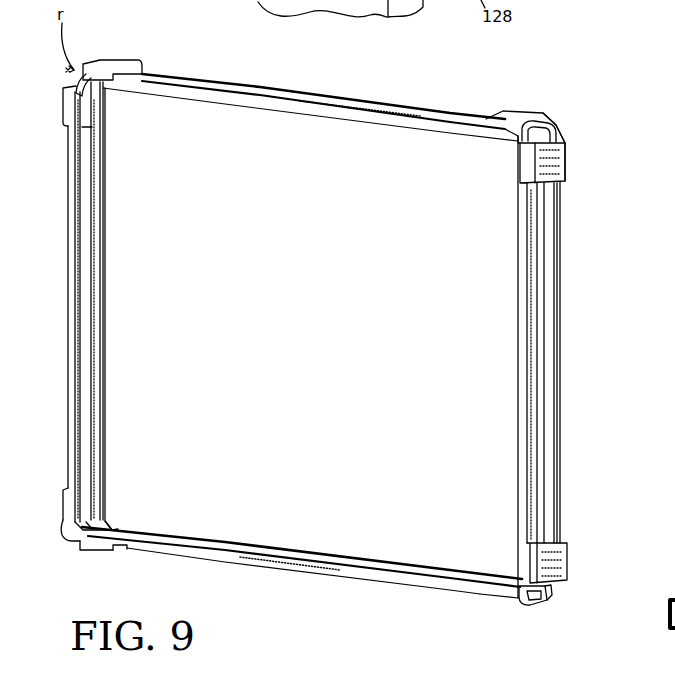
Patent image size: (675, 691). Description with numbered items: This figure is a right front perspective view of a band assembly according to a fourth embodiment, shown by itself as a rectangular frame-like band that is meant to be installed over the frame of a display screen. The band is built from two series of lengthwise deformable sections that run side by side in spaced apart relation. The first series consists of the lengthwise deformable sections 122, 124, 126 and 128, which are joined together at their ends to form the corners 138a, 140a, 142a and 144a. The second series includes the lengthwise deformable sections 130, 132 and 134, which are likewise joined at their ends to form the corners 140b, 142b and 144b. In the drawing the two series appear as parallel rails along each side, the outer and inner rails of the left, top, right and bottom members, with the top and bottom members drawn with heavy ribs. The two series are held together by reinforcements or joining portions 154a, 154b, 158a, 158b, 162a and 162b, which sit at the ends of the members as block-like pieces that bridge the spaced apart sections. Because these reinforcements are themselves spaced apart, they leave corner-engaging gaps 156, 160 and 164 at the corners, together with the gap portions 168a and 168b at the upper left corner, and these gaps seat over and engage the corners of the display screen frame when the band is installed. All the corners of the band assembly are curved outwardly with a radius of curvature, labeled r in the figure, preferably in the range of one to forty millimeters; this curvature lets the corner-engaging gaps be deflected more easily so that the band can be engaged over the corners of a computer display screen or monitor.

The lengthwise deformable section 122 is at (105, 316).
The lengthwise deformable section 124 is at (310, 85).
The lengthwise deformable section 126 is at (583, 367).
The lengthwise deformable section 128 is at (302, 582).
The lengthwise deformable section 130 is at (98, 265).
The lengthwise deformable section 132 is at (255, 86).
The lengthwise deformable section 134 is at (552, 308).
The corner 138a is at (86, 74).
The corner 140a is at (528, 130).
The corner 140b is at (560, 134).
The corner 142a is at (522, 598).
The corner 142b is at (551, 592).
The corner 144a is at (72, 530).
The corner 144b is at (116, 523).
The reinforcement or joining portion 154a is at (512, 110).
The reinforcement or joining portion 154b is at (566, 162).
The corner-engaging gap 156 is at (551, 126).
The reinforcement or joining portion 158a is at (567, 558).
The reinforcement or joining portion 158b is at (490, 606).
The corner-engaging gap 160 is at (537, 599).
The reinforcement or joining portion 162a is at (98, 553).
The reinforcement or joining portion 162b is at (58, 498).
The corner-engaging gap 164 is at (95, 522).
The corner-engaging gap portion 168a is at (62, 107).
The corner-engaging gap portion 168b is at (116, 60).